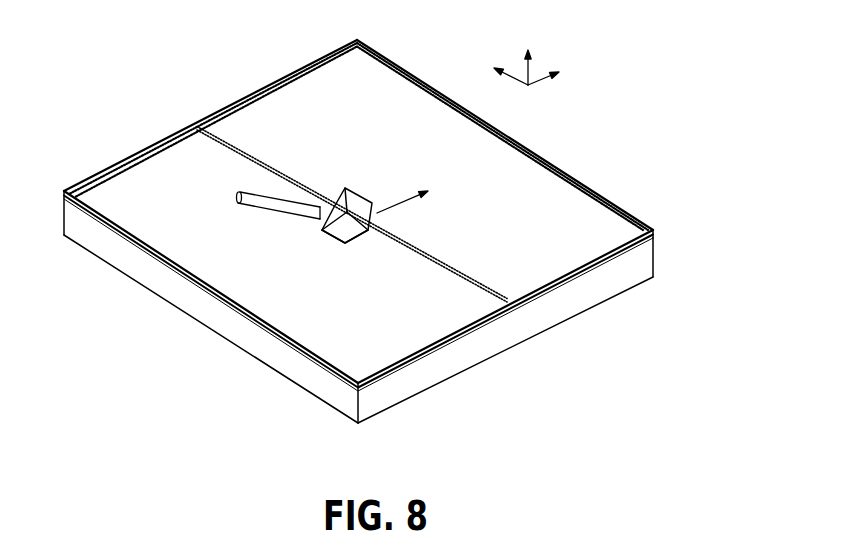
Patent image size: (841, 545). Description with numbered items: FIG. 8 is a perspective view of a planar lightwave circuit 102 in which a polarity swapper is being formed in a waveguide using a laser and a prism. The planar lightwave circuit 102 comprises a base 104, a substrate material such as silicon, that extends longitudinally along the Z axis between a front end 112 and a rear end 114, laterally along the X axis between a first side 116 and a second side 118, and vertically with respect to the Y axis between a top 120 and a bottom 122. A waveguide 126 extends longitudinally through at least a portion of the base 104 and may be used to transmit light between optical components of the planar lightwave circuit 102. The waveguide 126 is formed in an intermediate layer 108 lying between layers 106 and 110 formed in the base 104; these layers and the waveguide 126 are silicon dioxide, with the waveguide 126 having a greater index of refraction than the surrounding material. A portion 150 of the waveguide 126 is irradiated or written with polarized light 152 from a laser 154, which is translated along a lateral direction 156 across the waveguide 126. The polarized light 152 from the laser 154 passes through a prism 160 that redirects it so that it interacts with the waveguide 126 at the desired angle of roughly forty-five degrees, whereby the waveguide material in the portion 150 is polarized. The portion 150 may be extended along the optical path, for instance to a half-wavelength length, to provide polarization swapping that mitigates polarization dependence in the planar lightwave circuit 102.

The planar lightwave circuit 102 is at (79, 55).
The base 104 is at (410, 382).
The layer 106 is at (656, 256).
The intermediate layer 108 is at (626, 252).
The layer 110 is at (575, 284).
The front end 112 is at (465, 355).
The rear end 114 is at (126, 150).
The first side 116 is at (147, 269).
The second side 118 is at (564, 136).
The top 120 is at (570, 178).
The bottom 122 is at (222, 338).
The waveguide 126 is at (241, 151).
The portion 150 is at (367, 200).
The polarized light 152 is at (321, 230).
The laser 154 is at (267, 207).
The lateral direction 156 is at (408, 201).
The prism 160 is at (345, 188).